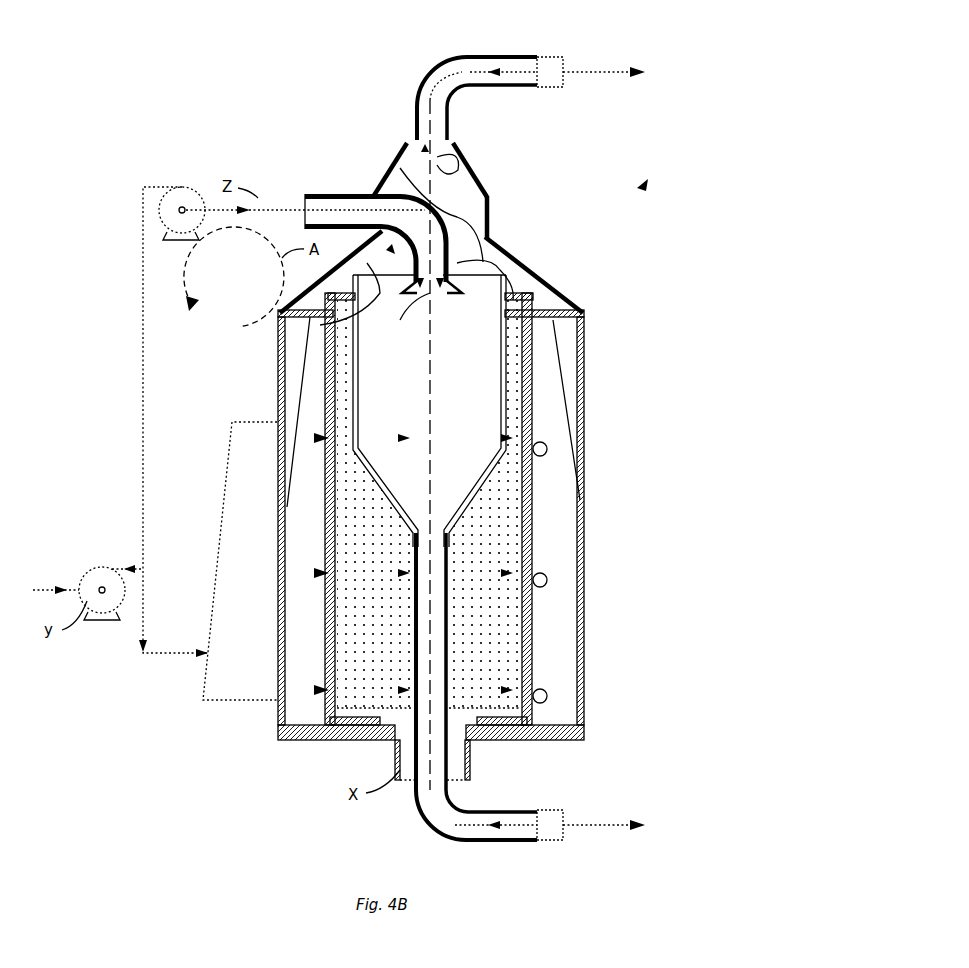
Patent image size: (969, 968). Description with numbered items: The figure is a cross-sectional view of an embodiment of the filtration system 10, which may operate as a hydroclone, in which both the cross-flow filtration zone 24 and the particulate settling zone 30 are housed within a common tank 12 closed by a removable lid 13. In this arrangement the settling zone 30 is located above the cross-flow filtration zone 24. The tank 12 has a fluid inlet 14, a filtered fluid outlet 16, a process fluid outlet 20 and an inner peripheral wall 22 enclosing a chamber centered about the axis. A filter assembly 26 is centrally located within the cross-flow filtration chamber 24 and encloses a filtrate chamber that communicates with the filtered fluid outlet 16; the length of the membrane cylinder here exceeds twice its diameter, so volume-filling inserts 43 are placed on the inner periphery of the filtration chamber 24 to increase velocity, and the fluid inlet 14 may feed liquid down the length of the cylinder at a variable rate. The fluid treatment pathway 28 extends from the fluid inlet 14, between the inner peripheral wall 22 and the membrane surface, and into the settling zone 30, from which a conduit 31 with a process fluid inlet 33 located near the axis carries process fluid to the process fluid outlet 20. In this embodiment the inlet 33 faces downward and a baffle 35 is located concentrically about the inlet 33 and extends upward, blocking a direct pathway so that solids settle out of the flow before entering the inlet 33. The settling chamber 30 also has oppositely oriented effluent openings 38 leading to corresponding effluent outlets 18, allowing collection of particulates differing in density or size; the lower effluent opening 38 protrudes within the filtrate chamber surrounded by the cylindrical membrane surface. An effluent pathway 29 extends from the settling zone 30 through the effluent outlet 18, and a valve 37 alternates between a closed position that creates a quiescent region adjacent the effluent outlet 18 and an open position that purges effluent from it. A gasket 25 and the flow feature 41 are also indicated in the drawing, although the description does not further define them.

The system 10 is at (538, 353).
The tank 12 is at (585, 390).
The removable lid 13 is at (580, 313).
The fluid inlet 14 is at (228, 698).
The filtered fluid outlet 16 is at (471, 765).
The effluent outlet 18 is at (450, 112).
The process fluid outlet 20 is at (333, 193).
The inner peripheral wall 22 is at (578, 580).
The cross-flow filtration zone 24 is at (573, 642).
The gasket 25 is at (283, 722).
The filter assembly 26 is at (513, 725).
The fluid treatment pathway 28 is at (543, 293).
The effluent pathway 29 is at (490, 200).
The particulate settling zone 30 is at (504, 240).
The conduit 31 is at (404, 168).
The process fluid inlet 33 is at (497, 300).
The baffle 35 is at (527, 283).
The valve 37 is at (550, 56).
The effluent opening 38 is at (473, 170).
The flow path 41 is at (511, 260).
The volume-filling inserts 43 is at (551, 378).